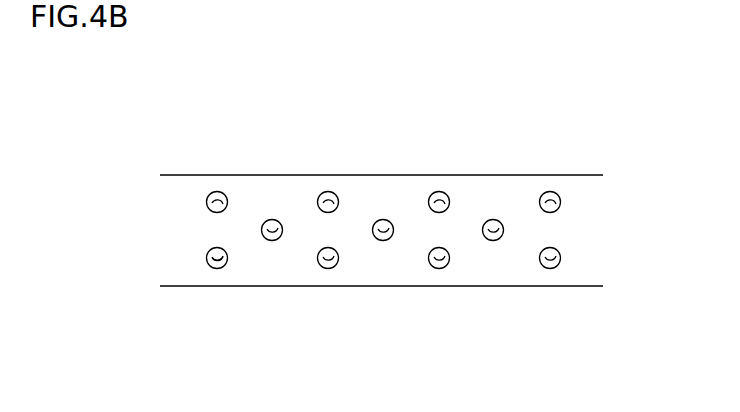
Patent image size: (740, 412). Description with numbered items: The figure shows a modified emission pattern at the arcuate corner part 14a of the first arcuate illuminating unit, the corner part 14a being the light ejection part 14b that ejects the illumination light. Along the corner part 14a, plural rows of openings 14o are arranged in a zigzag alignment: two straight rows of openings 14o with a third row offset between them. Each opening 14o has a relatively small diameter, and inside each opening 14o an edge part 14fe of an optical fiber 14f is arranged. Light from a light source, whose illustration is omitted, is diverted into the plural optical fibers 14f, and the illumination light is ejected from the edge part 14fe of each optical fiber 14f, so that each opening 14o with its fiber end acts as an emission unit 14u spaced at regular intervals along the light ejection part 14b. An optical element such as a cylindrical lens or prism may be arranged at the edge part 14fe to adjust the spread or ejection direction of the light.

The arcuate corner part 14a is at (570, 96).
The light ejection part 14b is at (588, 268).
The opening 14o is at (217, 191).
The emission unit 14u is at (380, 191).
The optical fiber 14f is at (164, 246).
The edge part 14fe is at (164, 258).